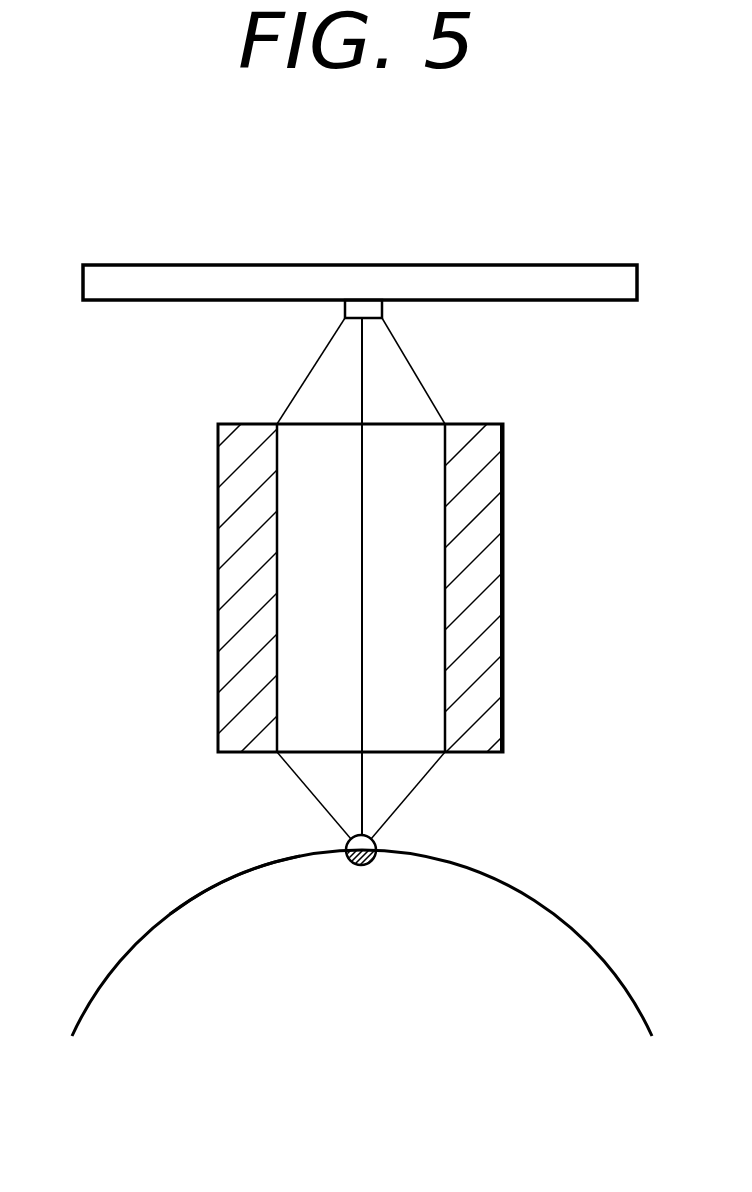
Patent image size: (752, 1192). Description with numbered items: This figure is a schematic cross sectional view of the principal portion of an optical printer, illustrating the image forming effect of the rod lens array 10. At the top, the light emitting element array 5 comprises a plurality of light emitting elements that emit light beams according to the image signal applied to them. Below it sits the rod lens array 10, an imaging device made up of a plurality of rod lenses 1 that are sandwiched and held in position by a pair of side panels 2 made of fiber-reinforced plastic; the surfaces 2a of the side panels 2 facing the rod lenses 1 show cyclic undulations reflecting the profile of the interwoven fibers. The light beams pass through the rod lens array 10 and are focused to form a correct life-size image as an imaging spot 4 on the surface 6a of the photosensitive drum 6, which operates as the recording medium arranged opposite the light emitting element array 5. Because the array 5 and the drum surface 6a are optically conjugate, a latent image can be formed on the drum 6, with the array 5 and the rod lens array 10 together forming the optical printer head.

The rod lens 1 is at (290, 517).
The side panel 2 is at (227, 615).
The surface of side panel 2a is at (277, 693).
The imaging spot 4 is at (368, 862).
The light emitting element array 5 is at (347, 307).
The photosensitive drum 6 is at (150, 957).
The surface of photosensitive drum 6a is at (218, 880).
The rod lens array 10 is at (178, 423).